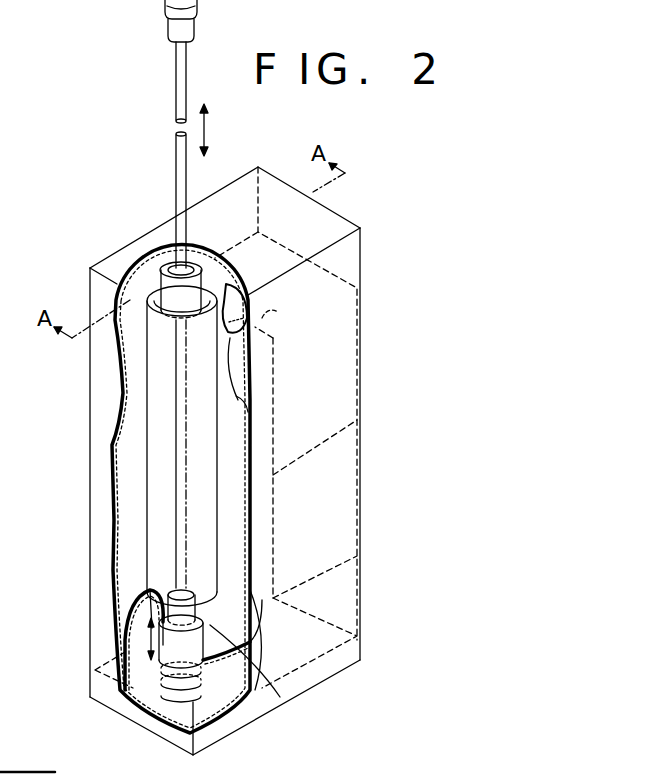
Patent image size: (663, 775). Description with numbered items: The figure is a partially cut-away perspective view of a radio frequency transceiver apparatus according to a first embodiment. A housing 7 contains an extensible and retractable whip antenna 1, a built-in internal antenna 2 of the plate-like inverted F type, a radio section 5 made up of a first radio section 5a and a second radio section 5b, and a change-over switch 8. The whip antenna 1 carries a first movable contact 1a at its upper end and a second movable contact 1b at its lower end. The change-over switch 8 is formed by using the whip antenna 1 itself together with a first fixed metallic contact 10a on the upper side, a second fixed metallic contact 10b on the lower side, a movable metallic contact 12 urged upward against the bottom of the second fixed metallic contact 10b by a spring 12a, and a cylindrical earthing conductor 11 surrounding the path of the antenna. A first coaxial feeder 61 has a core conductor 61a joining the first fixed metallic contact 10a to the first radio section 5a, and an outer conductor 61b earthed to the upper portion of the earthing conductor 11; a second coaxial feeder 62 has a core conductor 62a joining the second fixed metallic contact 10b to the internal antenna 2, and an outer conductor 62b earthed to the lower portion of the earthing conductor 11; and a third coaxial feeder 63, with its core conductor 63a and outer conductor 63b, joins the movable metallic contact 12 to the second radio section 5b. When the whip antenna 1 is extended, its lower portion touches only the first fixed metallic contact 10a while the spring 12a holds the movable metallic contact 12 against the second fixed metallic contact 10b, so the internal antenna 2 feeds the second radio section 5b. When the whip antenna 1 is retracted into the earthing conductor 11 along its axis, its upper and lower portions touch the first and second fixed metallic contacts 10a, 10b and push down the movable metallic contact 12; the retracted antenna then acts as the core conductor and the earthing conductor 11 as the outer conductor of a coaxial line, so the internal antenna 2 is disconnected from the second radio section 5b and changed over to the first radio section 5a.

The whip antenna 1 is at (178, 80).
The first movable contact 1a is at (189, 31).
The second movable contact 1b is at (170, 296).
The internal antenna 2 is at (104, 695).
The radio section 5 is at (345, 327).
The first radio section 5a is at (357, 418).
The second radio section 5b is at (357, 492).
The housing 7 is at (340, 225).
The change-over switch 8 is at (143, 483).
The first fixed metallic contact 10a is at (152, 286).
The second fixed metallic contact 10b is at (202, 640).
The cylindrical earthing conductor 11 is at (147, 430).
The movable metallic contact 12 is at (162, 626).
The spring 12a is at (174, 684).
The first coaxial feeder 61 is at (238, 347).
The core conductor of first coaxial feeder 61a is at (236, 290).
The outer conductor of first coaxial feeder 61b is at (237, 397).
The second coaxial feeder 62 is at (126, 633).
The core conductor of second coaxial feeder 62a is at (163, 618).
The outer conductor of second coaxial feeder 62b is at (152, 628).
The third coaxial feeder 63 is at (240, 661).
The core conductor of third coaxial feeder 63a is at (240, 665).
The outer conductor of third coaxial feeder 63b is at (280, 697).